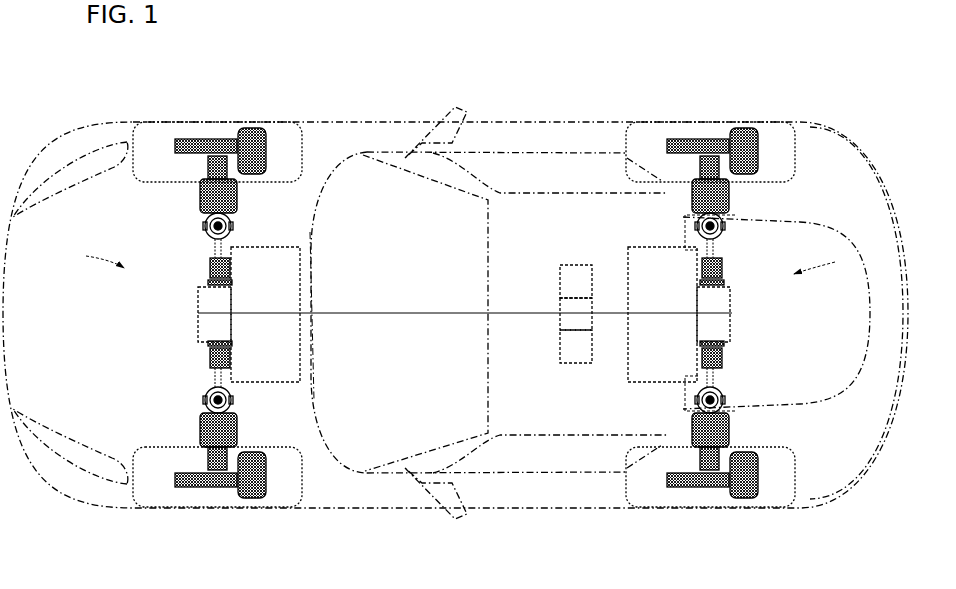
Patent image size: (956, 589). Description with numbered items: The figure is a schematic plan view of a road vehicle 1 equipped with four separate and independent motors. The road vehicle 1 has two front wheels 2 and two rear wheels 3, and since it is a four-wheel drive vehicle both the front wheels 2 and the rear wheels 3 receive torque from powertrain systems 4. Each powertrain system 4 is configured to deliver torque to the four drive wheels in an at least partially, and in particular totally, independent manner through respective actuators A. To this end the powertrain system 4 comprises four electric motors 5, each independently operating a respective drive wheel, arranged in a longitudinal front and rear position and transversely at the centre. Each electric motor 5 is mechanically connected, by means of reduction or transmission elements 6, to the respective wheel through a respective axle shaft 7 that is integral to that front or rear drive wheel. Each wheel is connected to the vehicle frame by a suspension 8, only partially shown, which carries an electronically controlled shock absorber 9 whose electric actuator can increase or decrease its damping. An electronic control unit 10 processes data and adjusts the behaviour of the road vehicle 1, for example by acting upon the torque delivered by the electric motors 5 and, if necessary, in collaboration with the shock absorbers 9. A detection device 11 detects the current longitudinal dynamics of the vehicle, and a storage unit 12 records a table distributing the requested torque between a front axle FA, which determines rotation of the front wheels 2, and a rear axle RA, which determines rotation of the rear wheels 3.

The road vehicle 1 is at (761, 70).
The front wheels 2 is at (297, 126).
The rear wheels 3 is at (640, 125).
The powertrain system 4 is at (165, 320).
The electric motors 5 is at (275, 287).
The reduction or transmission elements 6 is at (210, 309).
The axle shaft 7 is at (214, 249).
The suspension 8 is at (266, 206).
The electronically controlled shock absorber 9 is at (208, 230).
The electronic control unit 10 is at (586, 325).
The detection device 11 is at (586, 292).
The storage unit 12 is at (586, 359).
The front axle FA is at (91, 256).
The rear axle RA is at (826, 262).
The actuators A is at (309, 258).